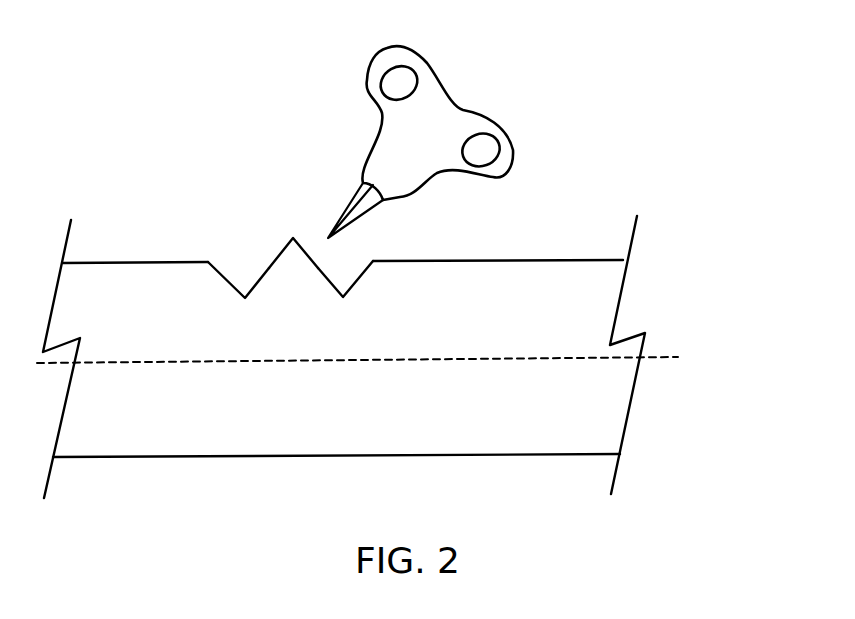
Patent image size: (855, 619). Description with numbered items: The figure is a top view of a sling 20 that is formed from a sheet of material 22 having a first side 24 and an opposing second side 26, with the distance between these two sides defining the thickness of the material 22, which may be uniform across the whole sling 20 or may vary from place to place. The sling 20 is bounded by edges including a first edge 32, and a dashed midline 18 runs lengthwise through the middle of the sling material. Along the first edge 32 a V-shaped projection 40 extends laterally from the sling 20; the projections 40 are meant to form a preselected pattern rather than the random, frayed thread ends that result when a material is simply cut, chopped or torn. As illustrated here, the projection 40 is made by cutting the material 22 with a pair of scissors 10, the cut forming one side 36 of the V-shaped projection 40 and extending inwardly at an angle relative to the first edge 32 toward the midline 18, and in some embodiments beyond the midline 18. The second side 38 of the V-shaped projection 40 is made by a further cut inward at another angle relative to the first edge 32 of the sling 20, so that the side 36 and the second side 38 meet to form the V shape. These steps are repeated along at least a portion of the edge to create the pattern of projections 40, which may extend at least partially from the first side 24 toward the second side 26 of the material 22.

The pair of scissors 10 is at (417, 55).
The sling 20 is at (594, 92).
The first side 24 is at (142, 283).
The first notch sidewall 36 is at (257, 292).
The projection 40 is at (282, 252).
The second side of the V-shaped projection 38 is at (335, 290).
The first edge 32 is at (517, 260).
The midline 18 is at (675, 356).
The second side 26 is at (290, 428).
The material 22 is at (463, 457).